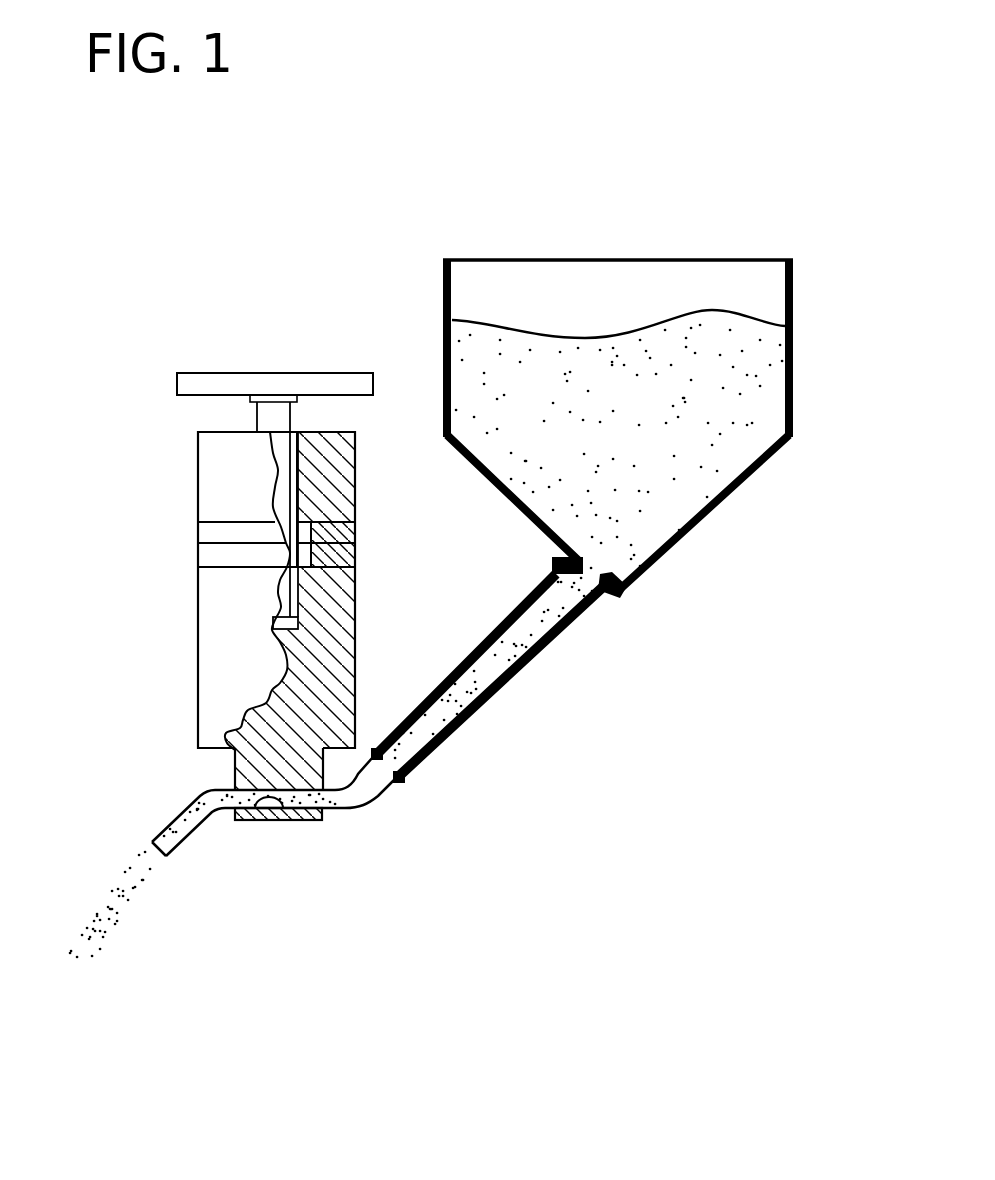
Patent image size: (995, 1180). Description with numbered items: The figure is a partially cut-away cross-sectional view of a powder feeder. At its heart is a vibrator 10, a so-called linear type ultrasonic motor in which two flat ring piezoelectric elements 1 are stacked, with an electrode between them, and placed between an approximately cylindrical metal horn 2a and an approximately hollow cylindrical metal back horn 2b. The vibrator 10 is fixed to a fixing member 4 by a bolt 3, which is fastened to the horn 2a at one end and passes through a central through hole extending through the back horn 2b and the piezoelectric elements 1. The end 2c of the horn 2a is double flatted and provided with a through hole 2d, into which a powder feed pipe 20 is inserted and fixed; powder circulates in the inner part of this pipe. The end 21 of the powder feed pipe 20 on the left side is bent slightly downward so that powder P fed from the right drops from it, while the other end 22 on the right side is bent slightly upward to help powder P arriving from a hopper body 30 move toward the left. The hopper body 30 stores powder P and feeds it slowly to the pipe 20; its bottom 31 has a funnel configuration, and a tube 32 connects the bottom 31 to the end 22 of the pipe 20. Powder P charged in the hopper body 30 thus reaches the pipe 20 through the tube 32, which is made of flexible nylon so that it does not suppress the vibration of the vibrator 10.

The piezoelectric element 1 is at (205, 530).
The horn 2a is at (222, 636).
The back horn 2b is at (205, 458).
The end of the horn 2c is at (243, 775).
The through hole 2d is at (287, 800).
The bolt 3 is at (285, 428).
The fixing member 4 is at (248, 373).
The vibrator 10 is at (200, 597).
The powder feed pipe 20 is at (341, 800).
The end of the powder feed pipe 21 is at (178, 843).
The other end of the pipe 22 is at (368, 799).
The hopper body 30 is at (795, 282).
The bottom 31 is at (700, 525).
The tube 32 is at (470, 707).
The powder P is at (620, 347).